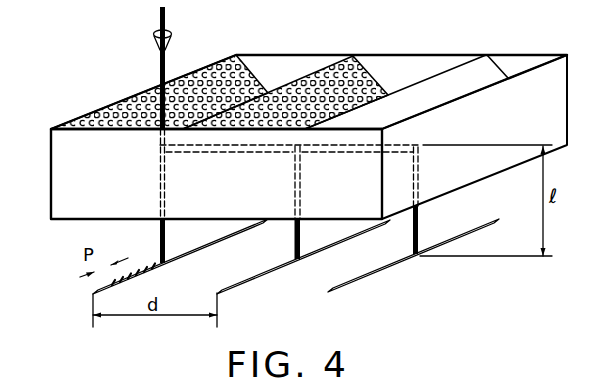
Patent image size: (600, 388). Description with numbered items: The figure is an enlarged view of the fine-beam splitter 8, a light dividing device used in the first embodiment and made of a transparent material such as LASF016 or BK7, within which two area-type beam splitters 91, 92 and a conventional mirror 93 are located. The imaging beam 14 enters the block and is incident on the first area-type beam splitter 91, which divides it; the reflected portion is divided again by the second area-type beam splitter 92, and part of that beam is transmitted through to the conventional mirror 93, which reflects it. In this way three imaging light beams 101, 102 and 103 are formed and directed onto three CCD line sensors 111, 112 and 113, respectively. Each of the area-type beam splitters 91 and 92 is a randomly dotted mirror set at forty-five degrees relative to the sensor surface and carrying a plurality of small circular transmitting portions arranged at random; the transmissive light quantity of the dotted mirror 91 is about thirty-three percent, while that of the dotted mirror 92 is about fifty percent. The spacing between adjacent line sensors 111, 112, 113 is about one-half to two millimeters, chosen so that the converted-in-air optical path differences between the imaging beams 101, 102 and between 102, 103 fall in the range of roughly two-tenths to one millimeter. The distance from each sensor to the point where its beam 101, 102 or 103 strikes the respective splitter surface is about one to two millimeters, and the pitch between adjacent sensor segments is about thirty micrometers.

The fine-beam splitter 8 is at (51, 182).
The imaging beam 14 is at (160, 17).
The area-type beam splitter 91 is at (213, 66).
The area-type beam splitter 92 is at (325, 68).
The conventional mirror 93 is at (488, 72).
The imaging light beam 101 is at (166, 250).
The imaging light beam 102 is at (302, 241).
The imaging light beam 103 is at (420, 219).
The CCD line sensor 111 is at (102, 288).
The CCD line sensor 112 is at (243, 291).
The CCD line sensor 113 is at (375, 278).